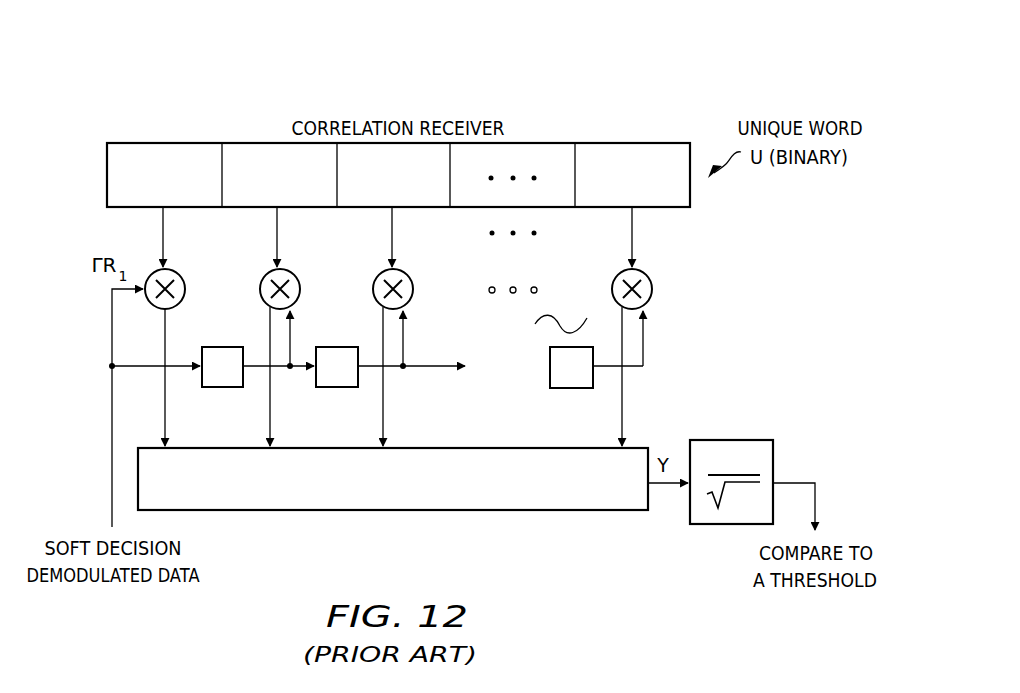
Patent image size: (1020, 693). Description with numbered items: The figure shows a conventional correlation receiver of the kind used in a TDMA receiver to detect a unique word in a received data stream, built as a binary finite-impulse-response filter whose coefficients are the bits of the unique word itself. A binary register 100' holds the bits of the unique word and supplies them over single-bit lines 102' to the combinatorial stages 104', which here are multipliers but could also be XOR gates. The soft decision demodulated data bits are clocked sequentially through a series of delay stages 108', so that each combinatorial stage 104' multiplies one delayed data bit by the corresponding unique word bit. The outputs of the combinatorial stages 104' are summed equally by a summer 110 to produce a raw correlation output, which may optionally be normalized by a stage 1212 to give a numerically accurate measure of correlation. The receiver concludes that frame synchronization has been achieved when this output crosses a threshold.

The binary register 100' is at (398, 185).
The 1-bit lines 102' is at (431, 237).
The combinatorial stages 104' is at (433, 355).
The delay stages 108' is at (416, 374).
The summer 110 is at (395, 510).
The normalizing stage 1212 is at (732, 440).